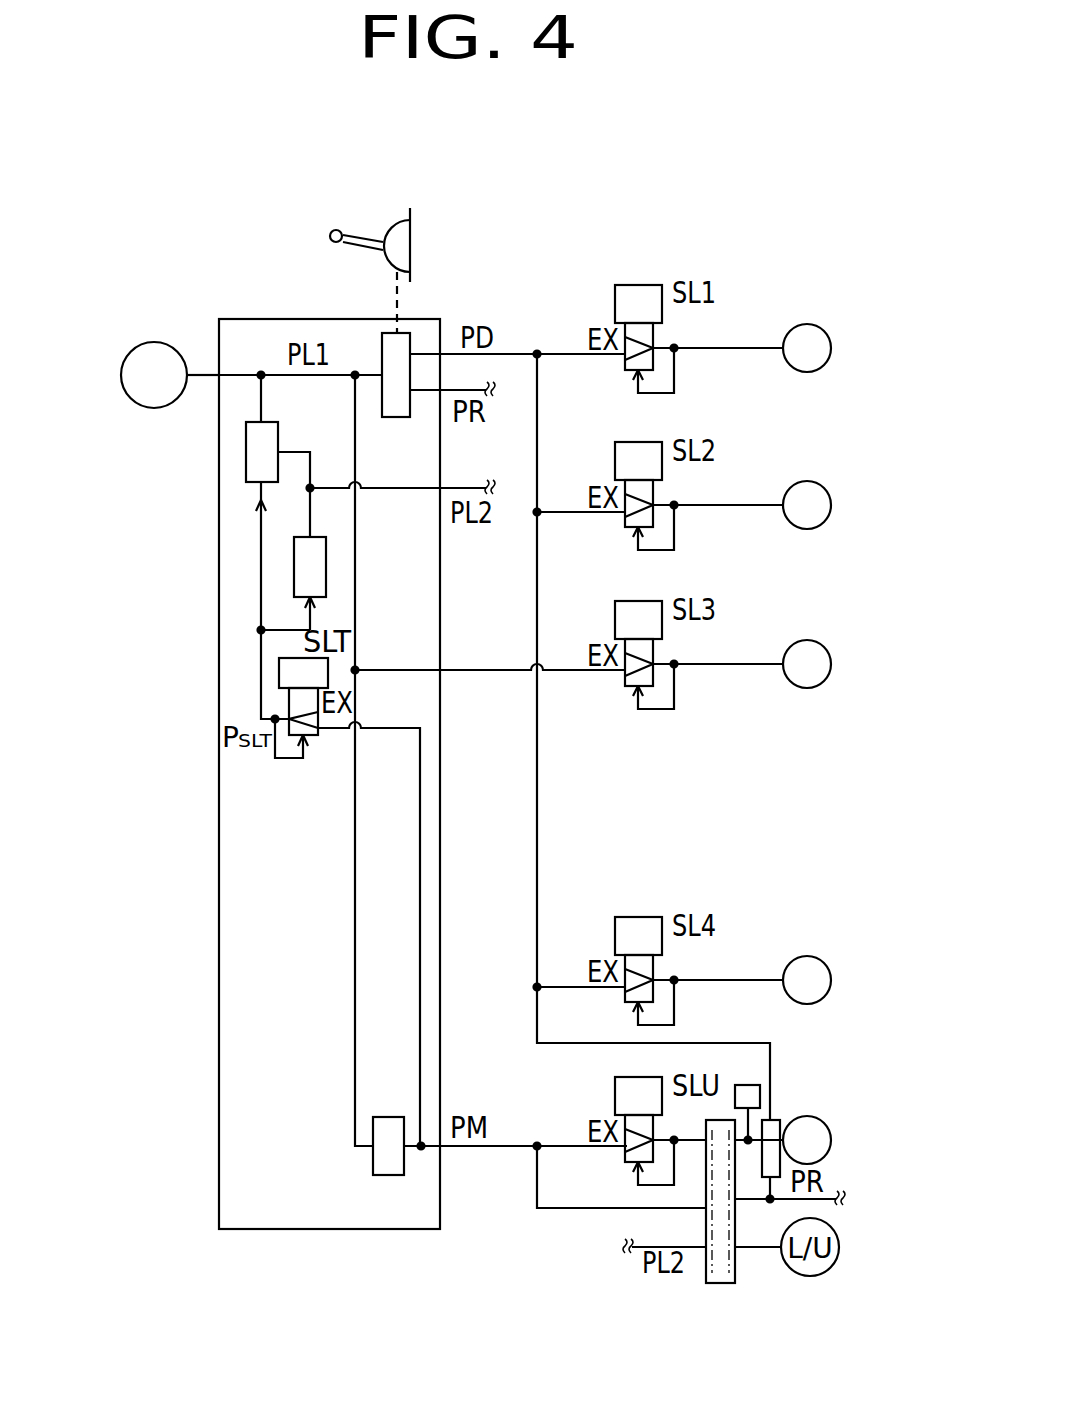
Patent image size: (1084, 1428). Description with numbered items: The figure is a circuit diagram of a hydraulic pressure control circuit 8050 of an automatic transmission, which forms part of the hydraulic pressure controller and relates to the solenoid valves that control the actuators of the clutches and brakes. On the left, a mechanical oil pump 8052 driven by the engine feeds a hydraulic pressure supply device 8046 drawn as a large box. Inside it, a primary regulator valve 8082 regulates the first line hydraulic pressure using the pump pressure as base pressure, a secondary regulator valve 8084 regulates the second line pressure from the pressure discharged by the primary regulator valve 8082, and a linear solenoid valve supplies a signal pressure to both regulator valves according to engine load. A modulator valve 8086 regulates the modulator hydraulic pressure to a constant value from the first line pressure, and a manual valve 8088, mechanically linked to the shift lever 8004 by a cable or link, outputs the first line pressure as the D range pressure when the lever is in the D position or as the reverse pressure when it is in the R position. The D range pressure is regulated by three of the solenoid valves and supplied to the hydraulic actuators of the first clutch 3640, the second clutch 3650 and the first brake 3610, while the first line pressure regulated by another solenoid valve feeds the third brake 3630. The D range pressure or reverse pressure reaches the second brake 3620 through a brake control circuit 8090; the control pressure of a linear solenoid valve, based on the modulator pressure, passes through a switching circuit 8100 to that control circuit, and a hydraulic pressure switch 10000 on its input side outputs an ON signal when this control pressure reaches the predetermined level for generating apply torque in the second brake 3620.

The hydraulic pressure control circuit 8050 is at (614, 204).
The mechanical oil pump 8052 is at (156, 342).
The hydraulic pressure supply device 8046 is at (292, 319).
The shift lever 8004 is at (363, 233).
The primary regulator valve 8082 is at (310, 422).
The secondary regulator valve 8084 is at (326, 563).
The modulator valve 8086 is at (373, 1160).
The manual valve 8088 is at (397, 418).
The C1 clutch 3640 is at (845, 307).
The C2 clutch 3650 is at (845, 465).
The B3 brake 3630 is at (845, 623).
The B1 brake 3610 is at (845, 938).
The B2 brake 3620 is at (845, 1098).
The B2 brake control circuit 8090 is at (780, 1120).
The hydraulic pressure switch 10000 is at (738, 1086).
The switching circuit 8100 is at (720, 1283).